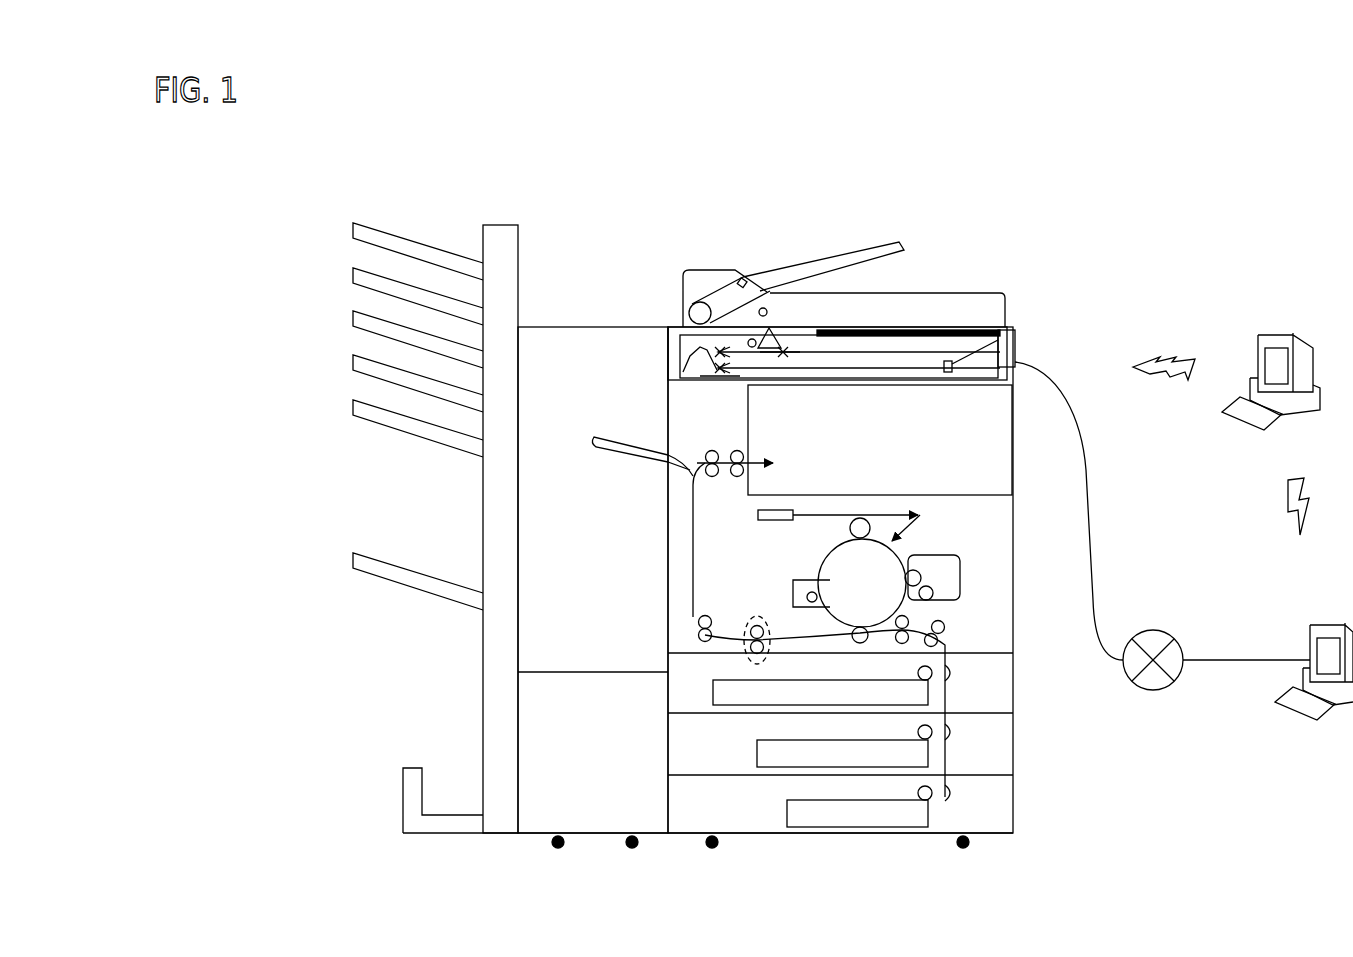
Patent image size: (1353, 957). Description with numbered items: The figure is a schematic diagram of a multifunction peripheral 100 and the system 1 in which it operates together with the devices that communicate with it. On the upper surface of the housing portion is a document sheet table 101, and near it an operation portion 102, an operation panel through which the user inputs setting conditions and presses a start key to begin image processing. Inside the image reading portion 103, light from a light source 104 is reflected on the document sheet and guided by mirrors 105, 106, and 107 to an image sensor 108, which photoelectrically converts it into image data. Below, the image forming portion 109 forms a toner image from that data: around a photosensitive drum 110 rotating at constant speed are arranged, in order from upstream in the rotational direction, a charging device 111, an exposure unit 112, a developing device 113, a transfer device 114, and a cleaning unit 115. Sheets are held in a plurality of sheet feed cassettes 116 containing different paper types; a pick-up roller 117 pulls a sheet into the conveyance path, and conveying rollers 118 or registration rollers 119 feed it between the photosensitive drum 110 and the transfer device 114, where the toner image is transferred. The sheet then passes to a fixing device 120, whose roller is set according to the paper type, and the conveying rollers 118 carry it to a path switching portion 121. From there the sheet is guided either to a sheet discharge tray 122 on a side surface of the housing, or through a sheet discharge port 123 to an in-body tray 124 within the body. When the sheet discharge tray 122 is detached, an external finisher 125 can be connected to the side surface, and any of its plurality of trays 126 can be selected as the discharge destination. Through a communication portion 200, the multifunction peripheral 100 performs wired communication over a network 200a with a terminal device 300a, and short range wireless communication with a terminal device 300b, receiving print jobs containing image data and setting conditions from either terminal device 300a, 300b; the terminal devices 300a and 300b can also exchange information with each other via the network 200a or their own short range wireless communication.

The image forming system 1 is at (1160, 220).
The multifunction peripheral 100 is at (841, 238).
The document sheet table 101 is at (913, 329).
The operation portion 102 is at (979, 326).
The image reading portion 103 is at (660, 380).
The light source 104 is at (776, 345).
The mirror 105 is at (788, 352).
The mirror 106 is at (700, 360).
The mirror 107 is at (718, 378).
The image sensor 108 is at (1003, 337).
The image forming portion 109 is at (658, 640).
The photosensitive drum 110 is at (835, 568).
The charging device 111 is at (848, 528).
The exposure unit 112 is at (758, 515).
The developing device 113 is at (960, 580).
The transfer device 114 is at (858, 641).
The cleaning unit 115 is at (793, 582).
The sheet feed cassettes 116 is at (713, 698).
The pick-up roller 117 is at (934, 673).
The conveying rollers 118 is at (700, 620).
The registration rollers 119 is at (900, 642).
The fixing device 120 is at (748, 645).
The path switching portion 121 is at (690, 479).
The sheet discharge tray 122 is at (598, 437).
The sheet discharge port 123 is at (752, 456).
The in-body tray 124 is at (831, 483).
The finisher 125 is at (565, 272).
The trays 126 is at (330, 200).
The communication portion 200 is at (1010, 362).
The network 200a is at (1153, 632).
The terminal device 300a is at (1318, 623).
The terminal device 300b is at (1265, 333).